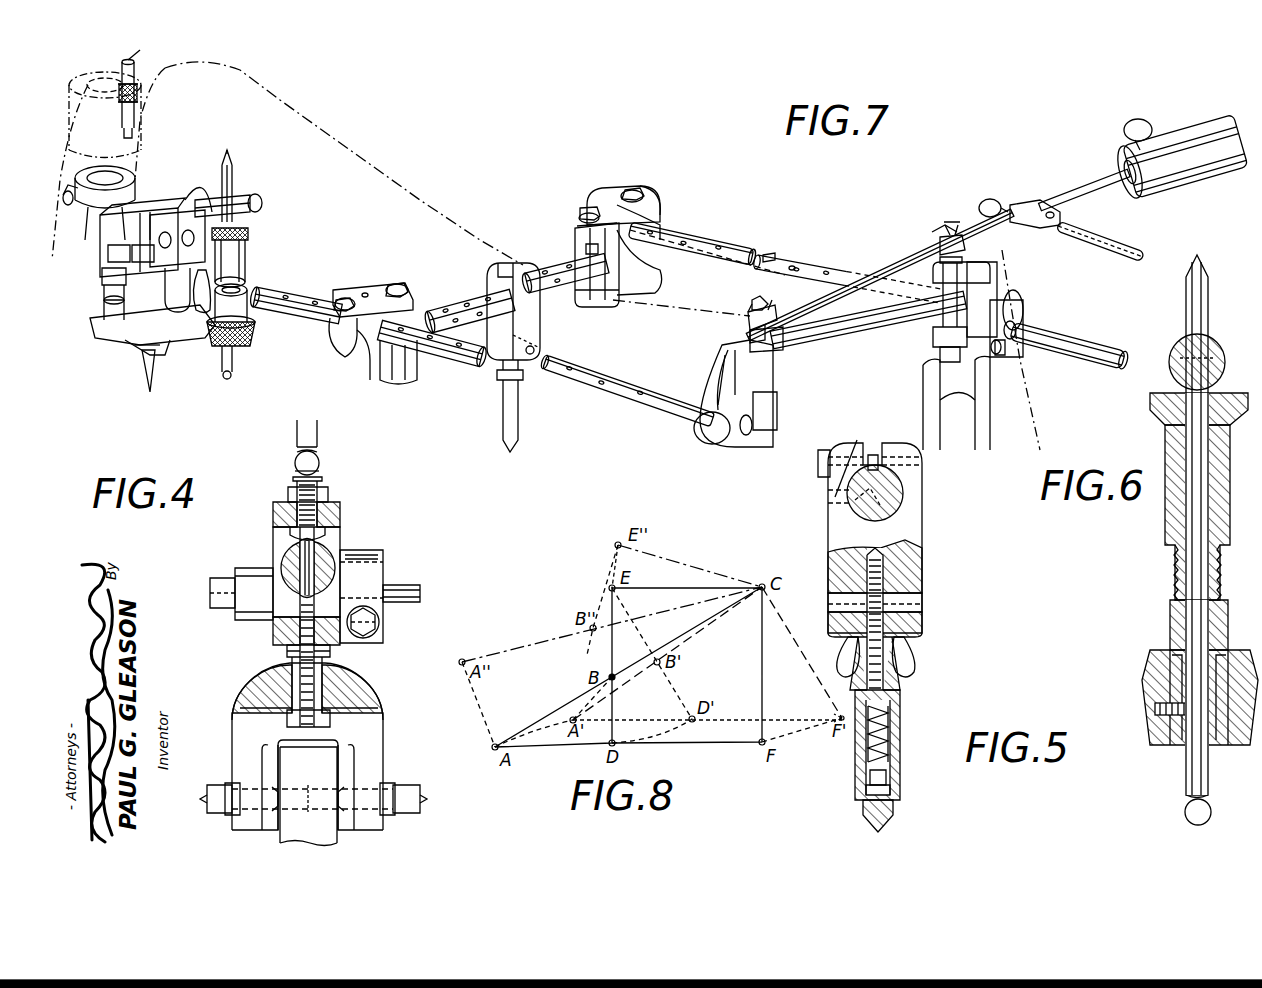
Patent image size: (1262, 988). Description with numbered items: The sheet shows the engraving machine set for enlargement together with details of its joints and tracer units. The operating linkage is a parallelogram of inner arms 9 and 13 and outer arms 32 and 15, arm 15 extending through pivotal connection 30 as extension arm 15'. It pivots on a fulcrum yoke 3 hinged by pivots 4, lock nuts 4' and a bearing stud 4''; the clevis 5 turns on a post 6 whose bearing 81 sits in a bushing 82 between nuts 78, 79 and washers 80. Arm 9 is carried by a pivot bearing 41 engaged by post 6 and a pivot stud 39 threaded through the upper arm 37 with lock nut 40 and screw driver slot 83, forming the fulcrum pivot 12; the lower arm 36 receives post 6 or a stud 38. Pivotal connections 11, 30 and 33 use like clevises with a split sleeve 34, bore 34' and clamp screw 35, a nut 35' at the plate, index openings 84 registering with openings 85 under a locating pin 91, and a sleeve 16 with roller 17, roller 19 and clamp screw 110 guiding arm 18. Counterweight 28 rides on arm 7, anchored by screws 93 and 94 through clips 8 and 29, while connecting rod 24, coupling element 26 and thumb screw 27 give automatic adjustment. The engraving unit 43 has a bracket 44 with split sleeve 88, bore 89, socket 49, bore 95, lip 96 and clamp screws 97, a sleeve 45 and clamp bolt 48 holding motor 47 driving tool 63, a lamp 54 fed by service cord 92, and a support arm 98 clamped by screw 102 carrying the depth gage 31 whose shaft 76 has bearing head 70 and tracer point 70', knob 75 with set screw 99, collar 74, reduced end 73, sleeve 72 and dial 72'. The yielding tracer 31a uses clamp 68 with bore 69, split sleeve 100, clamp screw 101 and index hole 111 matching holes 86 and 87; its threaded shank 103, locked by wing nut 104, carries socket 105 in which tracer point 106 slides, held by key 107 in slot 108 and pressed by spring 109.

In FIG. 7, the fulcrum yoke 3 is at (978, 400).
In FIG. 4, the fulcrum yoke 3 is at (384, 752).
In FIG. 4, the pivots 4 is at (319, 812).
In FIG. 4, the lock nuts 4' is at (322, 796).
In FIG. 4, the bearing stud 4'' is at (308, 796).
In FIG. 7, the clevis 5 is at (365, 360).
In FIG. 4, the clevis 5 is at (349, 552).
In FIG. 4, the post 6 is at (340, 683).
In FIG. 7, the arm 7 is at (1085, 190).
In FIG. 4, the arm 7 is at (320, 463).
In FIG. 7, the clip 8 is at (936, 232).
In FIG. 4, the clip 8 is at (318, 433).
In FIG. 7, the inner arm 9 is at (860, 356).
In FIG. 4, the inner arm 9 is at (334, 576).
In FIG. 7, the pivotal connection 11 is at (715, 356).
In FIG. 7, the fulcrum pivot 12 is at (986, 270).
In FIG. 4, the fulcrum pivot 12 is at (337, 540).
In FIG. 7, the inner arm 13 is at (840, 275).
In FIG. 4, the inner arm 13 is at (236, 577).
In FIG. 7, the outer arm 15 is at (627, 396).
In FIG. 7, the extension arm 15' is at (295, 292).
In FIG. 7, the split sleeve 16 is at (1020, 312).
In FIG. 4, the split sleeve 16 is at (385, 555).
In FIG. 7, the roller 17 is at (1023, 352).
In FIG. 7, the arm 18 is at (793, 265).
In FIG. 4, the arm 18 is at (420, 594).
In FIG. 7, the anti-friction roller 19 is at (768, 254).
In FIG. 7, the connecting rod 24 is at (1140, 252).
In FIG. 7, the coupling element 26 is at (1028, 205).
In FIG. 7, the thumb screw 27 is at (990, 200).
In FIG. 7, the secondary counterweight 28 is at (1205, 118).
In FIG. 7, the clip 29 is at (752, 308).
In FIG. 7, the pivotal connection 30 is at (388, 380).
In FIG. 7, the tracer point / depth gage 31 is at (256, 266).
In FIG. 6, the tracer point / depth gage 31 is at (1149, 605).
In FIG. 7, the spring cushioned tracer 31a is at (495, 408).
In FIG. 5, the spring cushioned tracer 31a is at (847, 779).
In FIG. 7, the outer arm 32 is at (480, 308).
In FIG. 5, the outer arm 32 is at (855, 500).
In FIG. 7, the pivotal connection 33 is at (589, 182).
In FIG. 7, the split sleeve 34 is at (669, 336).
In FIG. 7, the bore 34' is at (706, 323).
In FIG. 7, the clamp screw 35 is at (345, 292).
In FIG. 7, the nut 35' is at (660, 179).
In FIG. 7, the lower arm 36 is at (576, 233).
In FIG. 4, the lower arm 36 is at (273, 632).
In FIG. 7, the upper arm 37 is at (605, 307).
In FIG. 4, the upper arm 37 is at (273, 515).
In FIG. 7, the stud 38 is at (396, 284).
In FIG. 4, the pivot stud 39 is at (292, 532).
In FIG. 7, the lock nut 40 is at (408, 278).
In FIG. 4, the lock nut 40 is at (288, 494).
In FIG. 4, the pivot bearing 41 is at (316, 580).
In FIG. 7, the engraving unit 43 is at (226, 137).
In FIG. 7, the bracket 44 is at (150, 212).
In FIG. 7, the split sleeve 45 is at (92, 170).
In FIG. 7, the electric motor 47 is at (138, 92).
In FIG. 7, the clamp bolt 48 is at (70, 206).
In FIG. 7, the socket 49 is at (170, 212).
In FIG. 7, the lamp 54 is at (170, 318).
In FIG. 7, the engraving tool 63 is at (152, 395).
In FIG. 7, the clamp 68 is at (534, 325).
In FIG. 5, the clamp 68 is at (923, 531).
In FIG. 7, the bore 69 is at (536, 350).
In FIG. 5, the bore 69 is at (923, 606).
In FIG. 7, the bearing head 70 is at (242, 369).
In FIG. 6, the bearing head 70 is at (1183, 810).
In FIG. 7, the tracer point 70' is at (246, 140).
In FIG. 6, the tracer point 70' is at (1224, 264).
In FIG. 7, the sleeve 72 is at (244, 261).
In FIG. 6, the sleeve 72 is at (1183, 594).
In FIG. 7, the graduated dial 72' is at (251, 229).
In FIG. 6, the graduated dial 72' is at (1181, 409).
In FIG. 6, the reduced end 73 is at (1175, 578).
In FIG. 7, the extension collar 74 is at (248, 292).
In FIG. 6, the extension collar 74 is at (1172, 655).
In FIG. 7, the knurled gripping knob 75 is at (245, 342).
In FIG. 6, the knurled gripping knob 75 is at (1152, 710).
In FIG. 7, the shaft 76 is at (232, 180).
In FIG. 6, the shaft 76 is at (1209, 311).
In FIG. 4, the nut 78 is at (287, 720).
In FIG. 7, the nut 79 is at (950, 360).
In FIG. 4, the nut 79 is at (287, 650).
In FIG. 4, the washers 80 is at (322, 660).
In FIG. 4, the bearing 81 is at (292, 668).
In FIG. 4, the bushing 82 is at (292, 688).
In FIG. 4, the screw driver slot 83 is at (293, 479).
In FIG. 7, the index openings 84 is at (366, 292).
In FIG. 7, the index openings 85 is at (712, 240).
In FIG. 7, the index holes 86 is at (588, 262).
In FIG. 7, the index holes 87 is at (545, 296).
In FIG. 7, the split sleeve 88 is at (200, 215).
In FIG. 7, the bore 89 is at (102, 276).
In FIG. 7, the locating pin / index pin 91 is at (136, 133).
In FIG. 7, the electric service cord 92 is at (140, 106).
In FIG. 7, the screw 93 is at (940, 243).
In FIG. 4, the screw 93 is at (295, 463).
In FIG. 7, the screw 94 is at (748, 320).
In FIG. 7, the bore 95 is at (166, 292).
In FIG. 7, the lip 96 is at (108, 252).
In FIG. 7, the clamp screws 97 is at (132, 256).
In FIG. 7, the support arm 98 is at (245, 200).
In FIG. 6, the support arm 98 is at (1222, 358).
In FIG. 6, the set screw 99 is at (1155, 710).
In FIG. 5, the split sleeve 100 is at (910, 497).
In FIG. 5, the clamp screw 101 is at (818, 462).
In FIG. 7, the clamp screw 102 is at (262, 204).
In FIG. 6, the clamp screw 102 is at (1186, 355).
In FIG. 5, the threaded shank 103 is at (903, 685).
In FIG. 7, the wing nut 104 is at (1125, 130).
In FIG. 5, the wing nut 104 is at (914, 662).
In FIG. 5, the socket 105 is at (902, 712).
In FIG. 7, the tracer point 106 is at (516, 434).
In FIG. 5, the tracer point 106 is at (893, 815).
In FIG. 5, the key 107 is at (888, 776).
In FIG. 5, the longitudinal slot 108 is at (892, 792).
In FIG. 5, the compression spring 109 is at (890, 735).
In FIG. 7, the clamp screw 110 is at (998, 355).
In FIG. 4, the clamp screw 110 is at (380, 625).
In FIG. 5, the index hole 111 is at (857, 440).